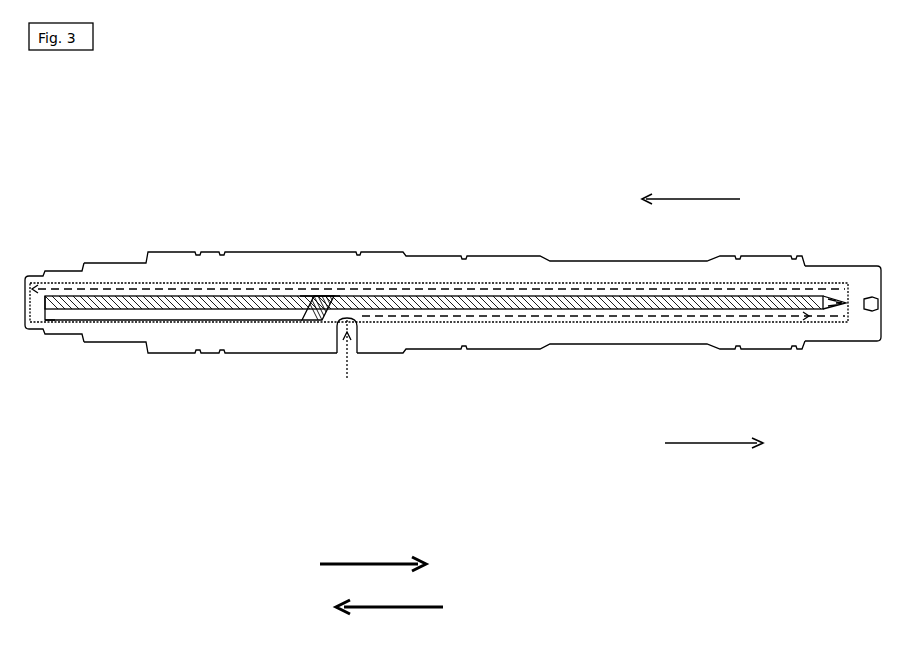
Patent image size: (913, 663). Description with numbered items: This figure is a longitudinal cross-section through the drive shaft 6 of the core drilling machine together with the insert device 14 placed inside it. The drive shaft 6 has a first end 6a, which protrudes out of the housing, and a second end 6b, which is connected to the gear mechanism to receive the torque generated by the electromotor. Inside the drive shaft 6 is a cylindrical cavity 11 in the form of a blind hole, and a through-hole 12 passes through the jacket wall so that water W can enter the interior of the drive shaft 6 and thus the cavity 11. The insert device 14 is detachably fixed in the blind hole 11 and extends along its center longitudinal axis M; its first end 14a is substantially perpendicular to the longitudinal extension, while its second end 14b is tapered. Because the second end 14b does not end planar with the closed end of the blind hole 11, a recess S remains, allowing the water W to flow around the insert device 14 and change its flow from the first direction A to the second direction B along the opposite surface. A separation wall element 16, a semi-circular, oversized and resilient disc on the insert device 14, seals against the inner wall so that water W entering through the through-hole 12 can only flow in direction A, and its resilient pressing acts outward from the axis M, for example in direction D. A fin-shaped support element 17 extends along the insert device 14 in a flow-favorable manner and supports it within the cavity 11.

The drive shaft 6 is at (292, 255).
The first end 6a is at (98, 272).
The second end 6b is at (862, 270).
The cylindrical cavity 11 is at (190, 317).
The through-hole 12 is at (352, 325).
The insert device 14 is at (363, 305).
The first end 14a is at (55, 310).
The second end 14b is at (833, 307).
The separation wall element 16 is at (318, 320).
The support element 17 is at (320, 295).
The water W is at (500, 315).
The recess S is at (835, 312).
The first direction A is at (714, 453).
The second direction B is at (691, 190).
The center longitudinal axis M is at (384, 565).
The direction D is at (376, 606).